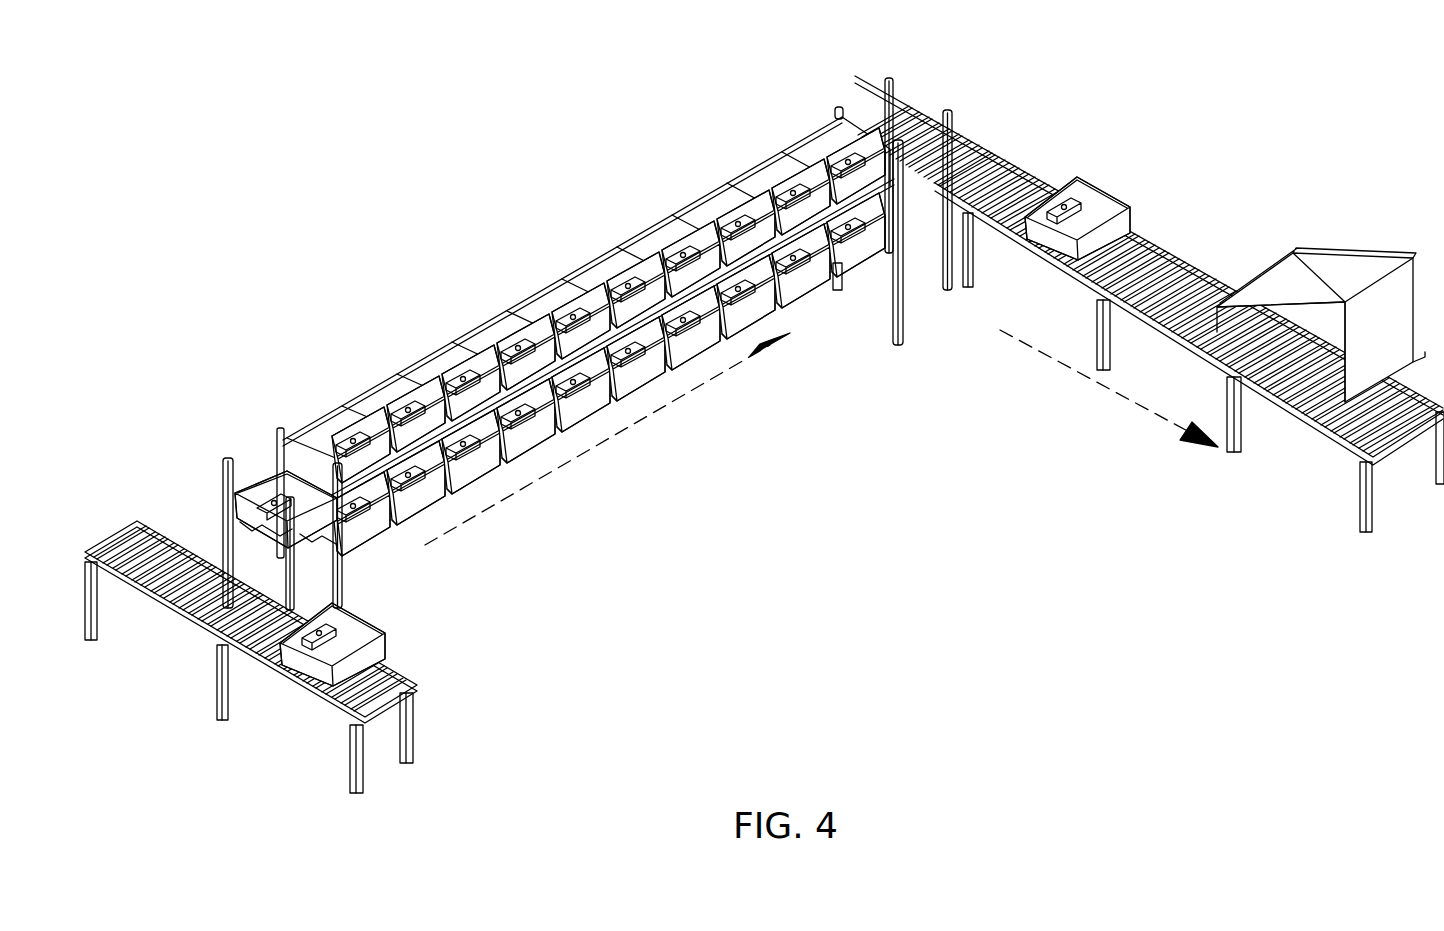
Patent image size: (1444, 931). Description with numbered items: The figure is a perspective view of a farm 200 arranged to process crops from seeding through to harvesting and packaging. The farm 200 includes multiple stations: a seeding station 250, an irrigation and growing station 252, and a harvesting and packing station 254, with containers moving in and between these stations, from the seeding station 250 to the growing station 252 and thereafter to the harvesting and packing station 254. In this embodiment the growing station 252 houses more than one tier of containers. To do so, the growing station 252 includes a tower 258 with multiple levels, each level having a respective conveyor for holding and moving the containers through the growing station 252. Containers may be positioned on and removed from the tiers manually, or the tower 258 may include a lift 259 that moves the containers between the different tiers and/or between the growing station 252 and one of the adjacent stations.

The farm 200 is at (1366, 143).
The seeding station 250 is at (207, 652).
The irrigation and growing station 252 is at (520, 285).
The harvesting and packing station 254 is at (1160, 232).
The tower 258 is at (900, 318).
The lift 259 is at (222, 477).